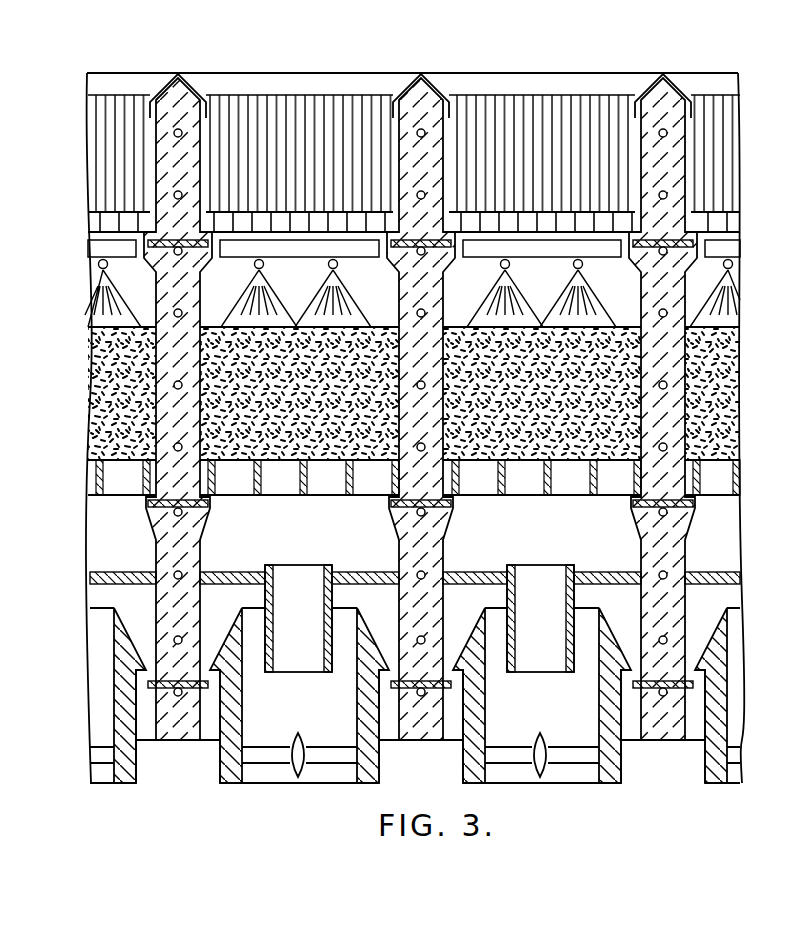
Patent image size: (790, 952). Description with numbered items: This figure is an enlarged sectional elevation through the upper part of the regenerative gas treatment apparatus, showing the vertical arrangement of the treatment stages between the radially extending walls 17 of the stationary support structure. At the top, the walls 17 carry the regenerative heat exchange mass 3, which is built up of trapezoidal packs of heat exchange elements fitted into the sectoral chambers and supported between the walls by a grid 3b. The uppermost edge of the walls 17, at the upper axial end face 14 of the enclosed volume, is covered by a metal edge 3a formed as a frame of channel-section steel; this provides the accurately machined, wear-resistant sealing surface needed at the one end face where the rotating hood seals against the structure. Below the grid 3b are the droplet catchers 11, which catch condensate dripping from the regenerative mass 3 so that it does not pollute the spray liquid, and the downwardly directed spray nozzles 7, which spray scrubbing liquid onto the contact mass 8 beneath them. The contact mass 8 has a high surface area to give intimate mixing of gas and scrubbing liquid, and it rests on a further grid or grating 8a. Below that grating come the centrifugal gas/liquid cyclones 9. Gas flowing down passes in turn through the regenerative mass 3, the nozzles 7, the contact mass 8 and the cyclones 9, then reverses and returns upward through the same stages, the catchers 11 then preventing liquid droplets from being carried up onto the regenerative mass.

The regenerative heat exchange mass 3 is at (104, 138).
The metal edge 3a is at (114, 92).
The grid 3b is at (84, 218).
The upper axial end face 14 is at (381, 73).
The radially extending walls 17 is at (168, 174).
The droplet catchers 11 is at (98, 250).
The spray nozzles 7 is at (110, 298).
The contact mass 8 is at (120, 395).
The grid or grating 8a is at (100, 488).
The gas/liquid cyclones 9 is at (108, 637).